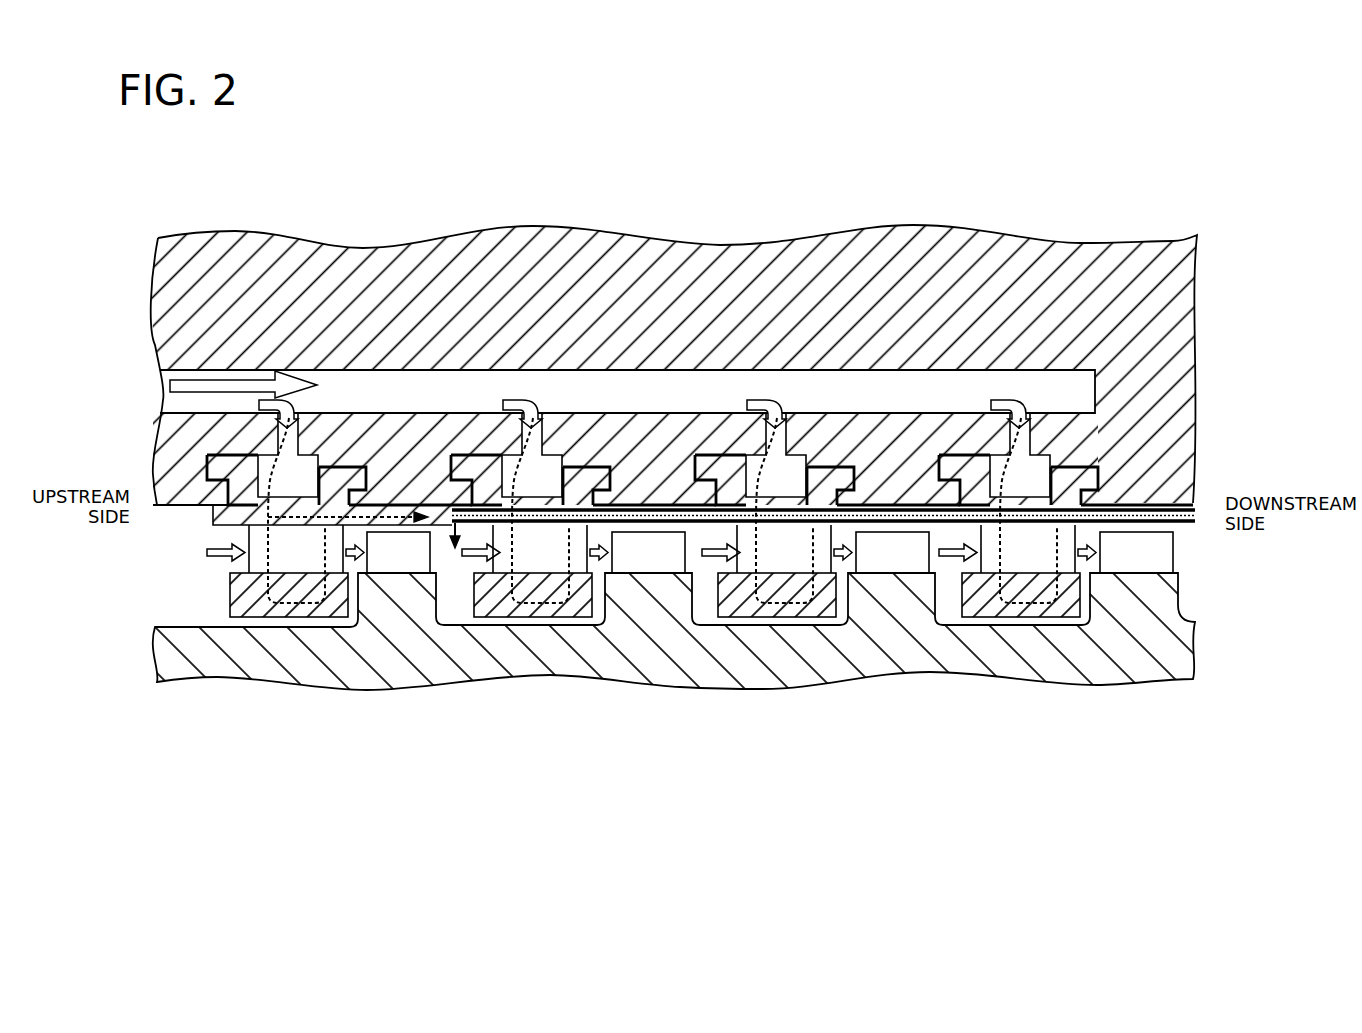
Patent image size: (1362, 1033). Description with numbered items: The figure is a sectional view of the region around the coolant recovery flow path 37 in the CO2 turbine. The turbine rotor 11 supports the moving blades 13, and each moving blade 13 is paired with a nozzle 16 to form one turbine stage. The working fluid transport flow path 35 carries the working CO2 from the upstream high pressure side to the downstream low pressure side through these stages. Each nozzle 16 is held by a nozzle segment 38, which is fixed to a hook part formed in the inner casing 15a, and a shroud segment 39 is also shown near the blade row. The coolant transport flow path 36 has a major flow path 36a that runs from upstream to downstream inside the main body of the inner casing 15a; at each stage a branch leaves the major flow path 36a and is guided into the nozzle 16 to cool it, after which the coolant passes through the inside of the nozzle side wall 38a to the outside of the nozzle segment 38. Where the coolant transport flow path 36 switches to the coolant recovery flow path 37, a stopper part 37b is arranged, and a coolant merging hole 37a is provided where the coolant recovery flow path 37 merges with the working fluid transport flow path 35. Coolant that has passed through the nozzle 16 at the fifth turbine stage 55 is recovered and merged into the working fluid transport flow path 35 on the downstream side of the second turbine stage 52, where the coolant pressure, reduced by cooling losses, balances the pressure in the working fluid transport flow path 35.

The turbine rotor 11 is at (1180, 635).
The moving blade 13 is at (383, 565).
The inner casing 15a is at (1060, 250).
The nozzle 16 is at (257, 567).
The working fluid transport flow path 35 is at (470, 552).
The coolant transport flow path 36 is at (556, 603).
The major flow path 36a is at (185, 362).
The coolant recovery flow path 37 is at (447, 528).
The coolant merging hole 37a is at (436, 487).
The stopper part 37b is at (1167, 507).
The nozzle segment 38 is at (217, 522).
The nozzle side wall 38a is at (395, 507).
The shroud segment 39 is at (172, 443).
The second turbine stage 52 is at (412, 512).
The fifth turbine stage 55 is at (1150, 492).